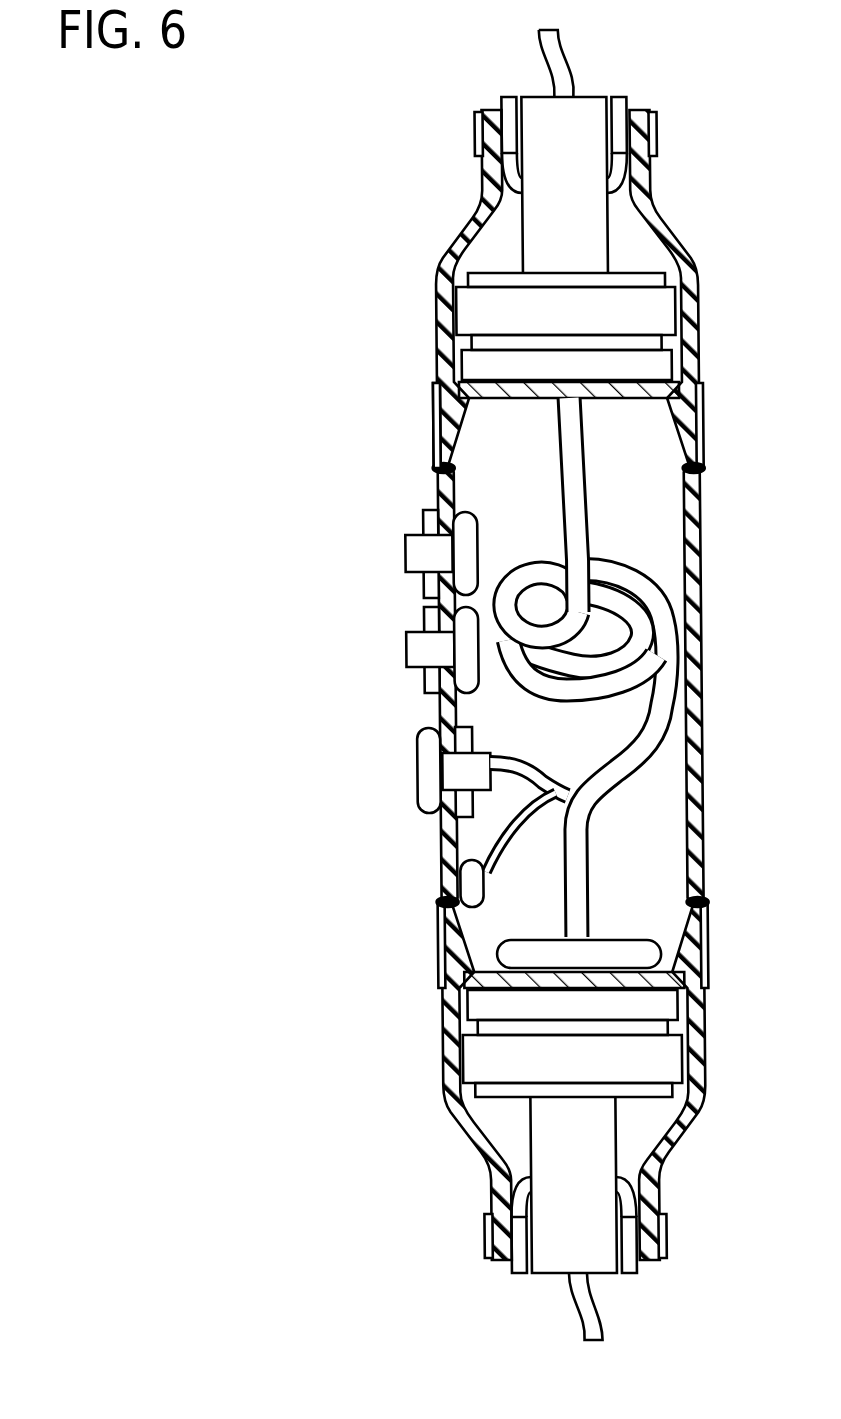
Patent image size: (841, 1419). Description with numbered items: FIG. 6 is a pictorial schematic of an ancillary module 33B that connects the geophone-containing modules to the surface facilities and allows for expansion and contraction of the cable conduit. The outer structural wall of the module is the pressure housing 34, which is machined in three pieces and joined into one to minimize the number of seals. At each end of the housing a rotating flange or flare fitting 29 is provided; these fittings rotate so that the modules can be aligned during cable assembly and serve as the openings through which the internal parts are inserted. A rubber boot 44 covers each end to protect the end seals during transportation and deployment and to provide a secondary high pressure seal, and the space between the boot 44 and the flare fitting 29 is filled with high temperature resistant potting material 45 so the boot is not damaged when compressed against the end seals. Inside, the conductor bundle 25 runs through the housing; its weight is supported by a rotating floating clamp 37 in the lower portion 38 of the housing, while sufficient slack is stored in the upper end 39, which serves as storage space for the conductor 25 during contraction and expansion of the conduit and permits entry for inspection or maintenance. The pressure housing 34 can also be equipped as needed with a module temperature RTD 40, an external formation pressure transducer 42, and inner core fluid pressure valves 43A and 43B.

The rubber boot 44 is at (682, 234).
The high temperature resistant potting material 45 is at (516, 258).
The rotating flange or flare fitting 29 is at (668, 307).
The module 33B is at (408, 372).
The upper end of the pressure housing 39 is at (637, 453).
The pressure housing 34 is at (435, 483).
The conductor bundle 25 is at (588, 493).
The inner core fluid valve 43A is at (403, 553).
The inner core fluid valve 43B is at (405, 652).
The external formation pressure transducer 42 is at (417, 772).
The module temperature RTD 40 is at (478, 890).
The lower portion of the pressure housing 38 is at (662, 889).
The rotating floating clamp 37 is at (592, 967).